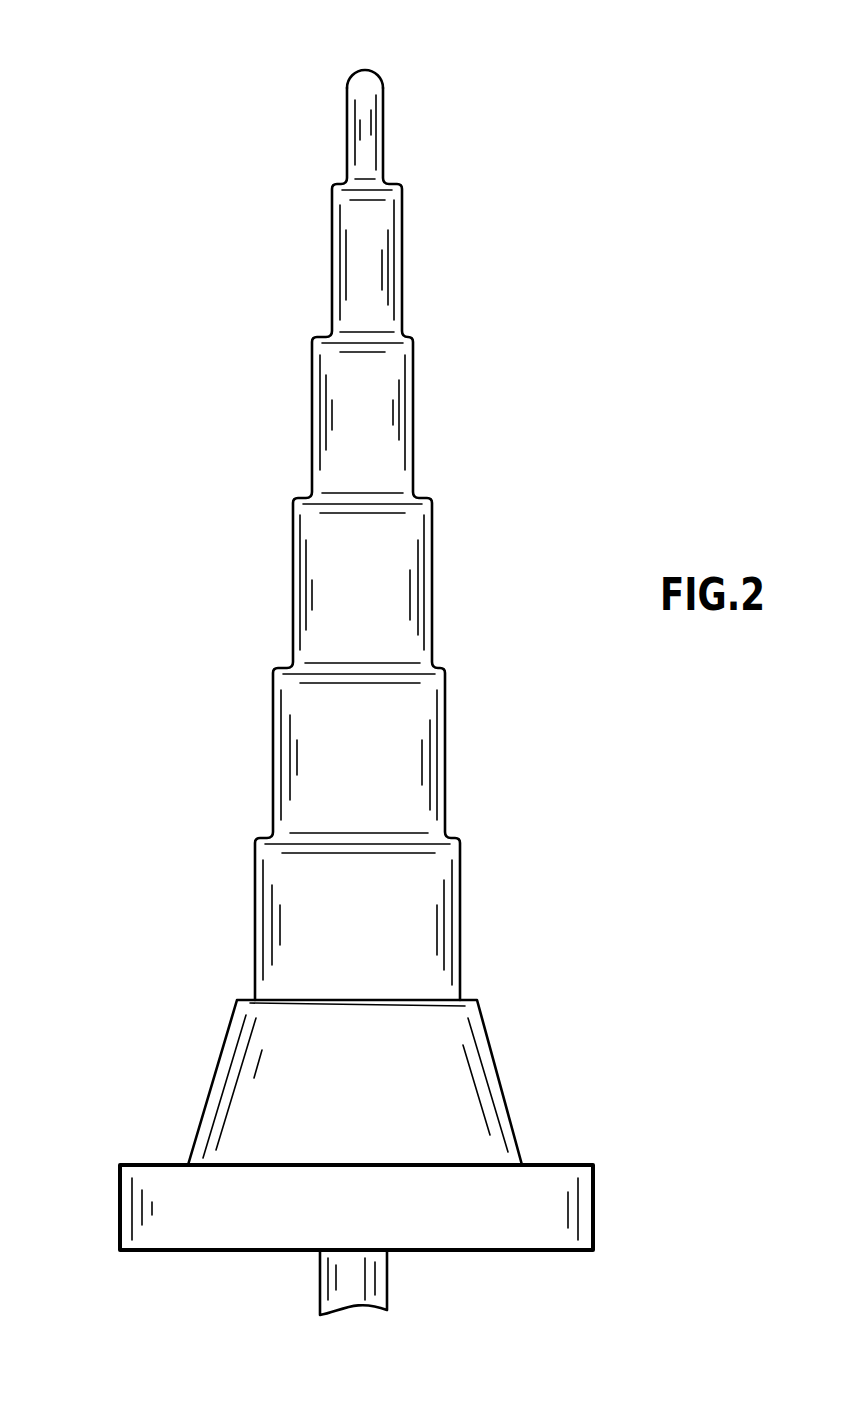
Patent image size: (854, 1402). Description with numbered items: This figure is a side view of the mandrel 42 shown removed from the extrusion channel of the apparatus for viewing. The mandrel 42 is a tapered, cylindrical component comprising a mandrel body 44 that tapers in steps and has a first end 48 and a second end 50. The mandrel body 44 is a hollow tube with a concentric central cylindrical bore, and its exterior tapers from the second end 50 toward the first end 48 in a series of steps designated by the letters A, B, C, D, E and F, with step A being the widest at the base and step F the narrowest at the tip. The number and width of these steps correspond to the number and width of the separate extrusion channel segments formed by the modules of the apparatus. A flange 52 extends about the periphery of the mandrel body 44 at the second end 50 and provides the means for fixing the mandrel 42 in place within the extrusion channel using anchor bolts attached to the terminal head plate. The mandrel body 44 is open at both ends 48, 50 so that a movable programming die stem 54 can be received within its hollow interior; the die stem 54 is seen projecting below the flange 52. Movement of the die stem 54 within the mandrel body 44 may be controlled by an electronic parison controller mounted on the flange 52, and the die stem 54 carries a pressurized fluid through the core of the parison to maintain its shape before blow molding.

The mandrel 42 is at (198, 526).
The mandrel body 44 is at (308, 375).
The first end 48 is at (366, 70).
The step F is at (378, 116).
The step E is at (393, 268).
The step D is at (400, 422).
The step C is at (415, 588).
The step B is at (415, 770).
The step A is at (440, 935).
The second end 50 is at (310, 1165).
The flange 52 is at (582, 1200).
The die stem 54 is at (386, 1273).